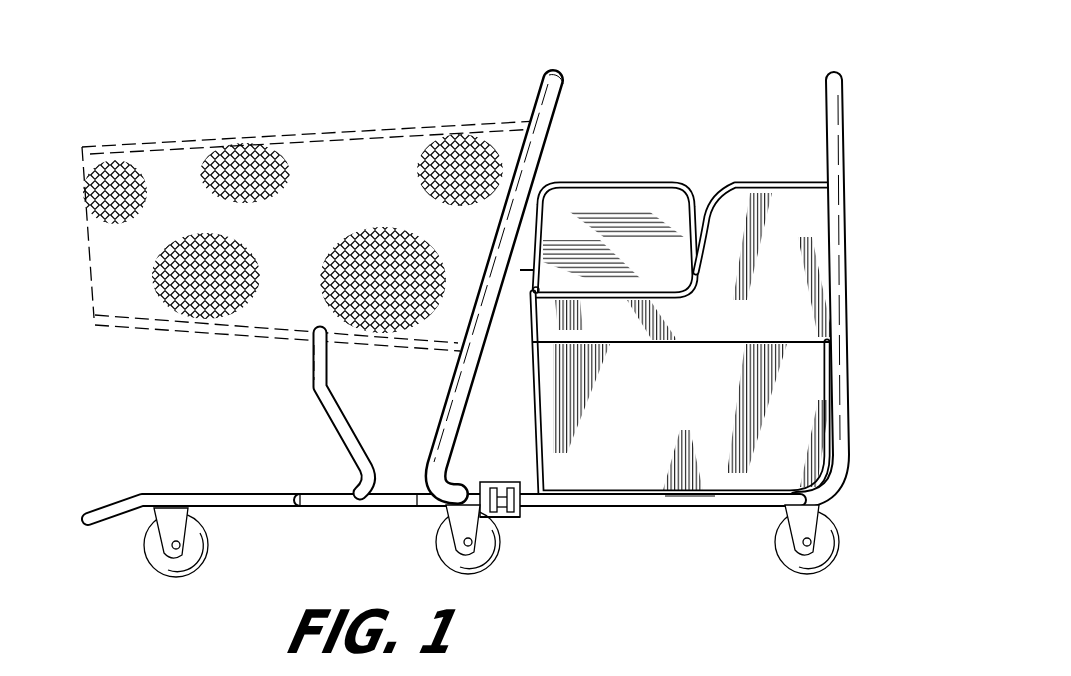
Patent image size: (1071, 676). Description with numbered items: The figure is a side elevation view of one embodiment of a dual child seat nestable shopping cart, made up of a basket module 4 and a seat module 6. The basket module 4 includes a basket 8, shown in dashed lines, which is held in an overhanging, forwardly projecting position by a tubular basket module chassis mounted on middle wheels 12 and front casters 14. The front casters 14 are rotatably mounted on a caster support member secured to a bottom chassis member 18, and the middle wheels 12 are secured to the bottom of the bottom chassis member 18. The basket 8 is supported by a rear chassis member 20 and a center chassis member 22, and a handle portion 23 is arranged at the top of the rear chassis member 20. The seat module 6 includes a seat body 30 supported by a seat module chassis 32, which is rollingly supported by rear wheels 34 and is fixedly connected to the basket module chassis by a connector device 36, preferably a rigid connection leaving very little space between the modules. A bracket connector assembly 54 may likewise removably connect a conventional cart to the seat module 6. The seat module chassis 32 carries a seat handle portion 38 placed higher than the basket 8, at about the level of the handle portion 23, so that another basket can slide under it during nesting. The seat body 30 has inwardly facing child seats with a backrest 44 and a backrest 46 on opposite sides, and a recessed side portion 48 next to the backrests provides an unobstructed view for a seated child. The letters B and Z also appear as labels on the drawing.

The basket module 4 is at (294, 195).
The basket B is at (294, 206).
The handle direction / axis Z is at (573, 29).
The seat module 6 is at (668, 248).
The basket 8 is at (494, 286).
The middle wheels 12 is at (511, 557).
The front casters 14 is at (145, 575).
The bottom chassis member 18 is at (195, 481).
The rear chassis member 20 is at (550, 293).
The center chassis member 22 is at (262, 362).
The handle portion 23 is at (610, 63).
The seat body 30 is at (711, 393).
The seat module chassis 32 is at (694, 548).
The rear wheels 34 is at (808, 580).
The connector device 36 is at (500, 452).
The seat handle portion 38 is at (848, 260).
The backrest 44 is at (615, 211).
The backrest 46 is at (765, 219).
The recessed side portion 48 is at (503, 266).
The bracket connector assembly 54 is at (547, 534).